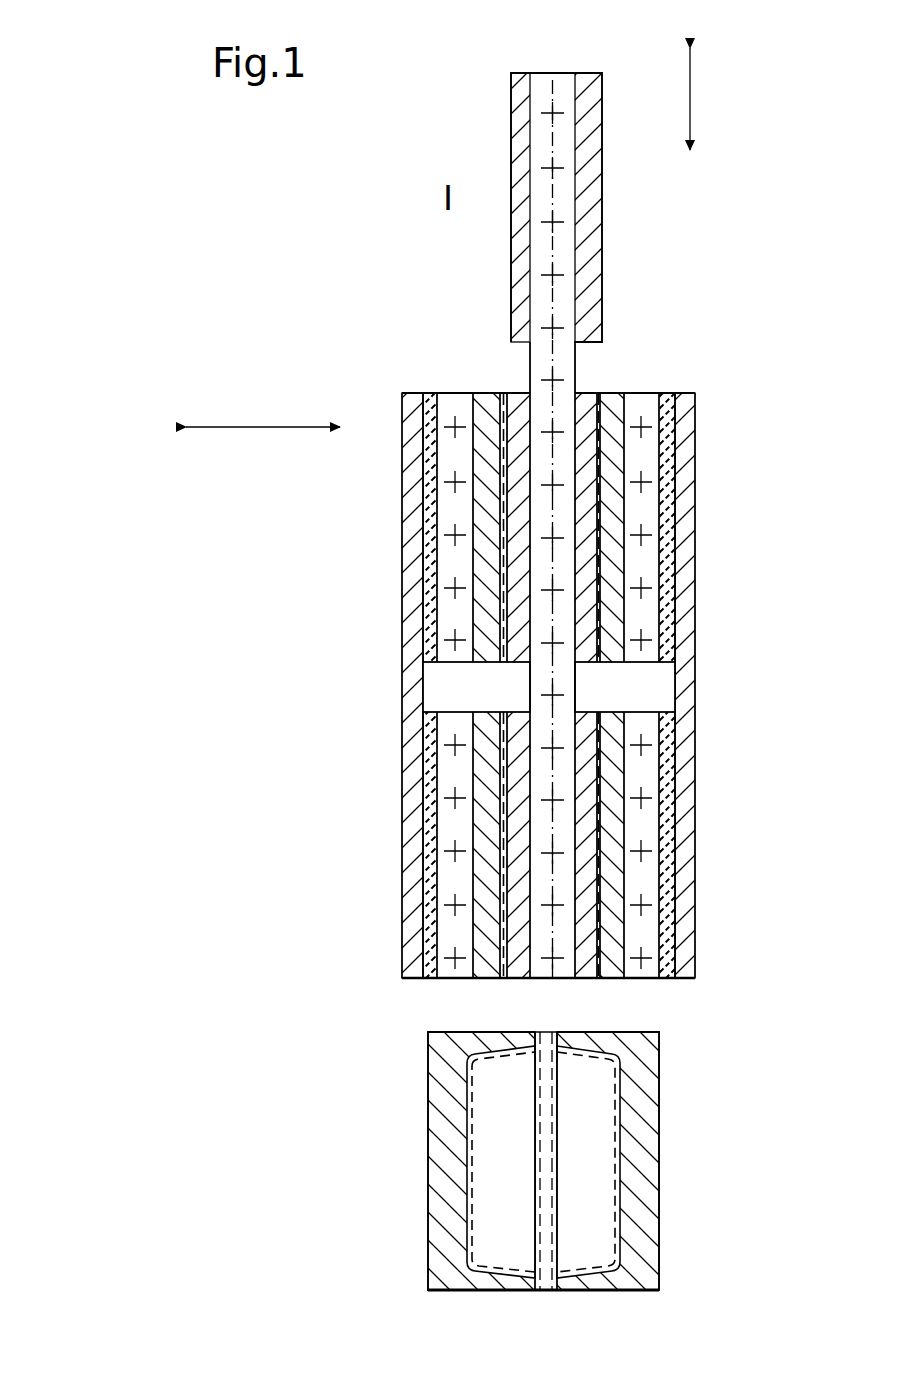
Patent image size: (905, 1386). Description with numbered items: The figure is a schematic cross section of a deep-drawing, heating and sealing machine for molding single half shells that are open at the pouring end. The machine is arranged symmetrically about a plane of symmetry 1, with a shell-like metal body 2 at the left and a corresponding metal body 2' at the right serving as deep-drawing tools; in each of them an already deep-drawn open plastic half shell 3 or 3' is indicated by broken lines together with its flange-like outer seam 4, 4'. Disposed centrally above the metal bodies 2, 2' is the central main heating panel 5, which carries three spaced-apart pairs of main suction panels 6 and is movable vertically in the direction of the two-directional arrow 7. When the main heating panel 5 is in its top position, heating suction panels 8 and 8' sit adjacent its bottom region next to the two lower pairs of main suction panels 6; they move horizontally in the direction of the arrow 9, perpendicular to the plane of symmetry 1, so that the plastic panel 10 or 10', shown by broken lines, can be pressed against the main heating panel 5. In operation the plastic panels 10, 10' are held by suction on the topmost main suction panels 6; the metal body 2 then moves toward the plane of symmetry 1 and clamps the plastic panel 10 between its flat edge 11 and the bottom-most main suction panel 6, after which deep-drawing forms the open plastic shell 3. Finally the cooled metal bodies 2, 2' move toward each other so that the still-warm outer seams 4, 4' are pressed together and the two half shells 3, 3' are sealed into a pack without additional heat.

The plane of symmetry 1 is at (560, 213).
The shell-like metal body 2 is at (433, 1161).
The shell-like metal body 2' is at (646, 1161).
The open plastic half shell 3 is at (442, 1162).
The open plastic half shell 3' is at (649, 1162).
The flange-like outer seam 4 is at (543, 1251).
The flange-like outer seam 4' is at (586, 1074).
The central main heating panel 5 is at (574, 45).
The main suction panels 6 is at (577, 878).
The two-directional arrow 7 is at (690, 103).
The heating suction panel 8 is at (443, 617).
The heating suction panel 8' is at (664, 619).
The arrow 9 is at (267, 427).
The plastic panel 10 is at (413, 685).
The plastic panel 10' is at (686, 685).
The flat edge 11 is at (530, 1037).